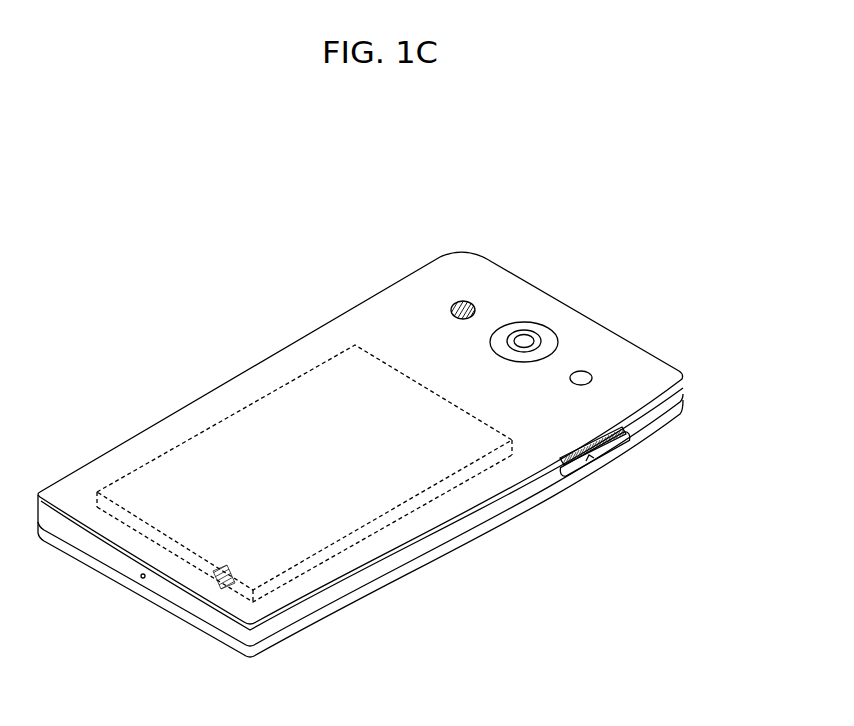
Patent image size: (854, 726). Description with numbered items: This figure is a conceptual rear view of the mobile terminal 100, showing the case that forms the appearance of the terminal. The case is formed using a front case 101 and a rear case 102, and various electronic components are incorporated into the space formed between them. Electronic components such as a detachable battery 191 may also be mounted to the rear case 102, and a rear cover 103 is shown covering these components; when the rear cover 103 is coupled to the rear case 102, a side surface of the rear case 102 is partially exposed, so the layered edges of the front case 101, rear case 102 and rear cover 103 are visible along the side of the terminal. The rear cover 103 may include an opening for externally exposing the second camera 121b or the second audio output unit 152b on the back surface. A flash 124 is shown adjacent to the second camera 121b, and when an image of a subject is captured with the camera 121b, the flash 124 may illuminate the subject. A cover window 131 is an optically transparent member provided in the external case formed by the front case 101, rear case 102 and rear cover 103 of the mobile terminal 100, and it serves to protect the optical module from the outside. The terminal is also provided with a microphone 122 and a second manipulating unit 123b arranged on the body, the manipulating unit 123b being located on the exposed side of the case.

The mobile terminal 100 is at (237, 318).
The front case 101 is at (684, 413).
The rear case 102 is at (684, 393).
The rear cover 103 is at (684, 374).
The second camera 121b is at (572, 340).
The microphone 122 is at (141, 578).
The second manipulating unit 123b is at (578, 464).
The flash 124 is at (590, 371).
The cover window 131 is at (531, 333).
The second audio output unit 152b is at (471, 301).
The battery 191 is at (392, 525).